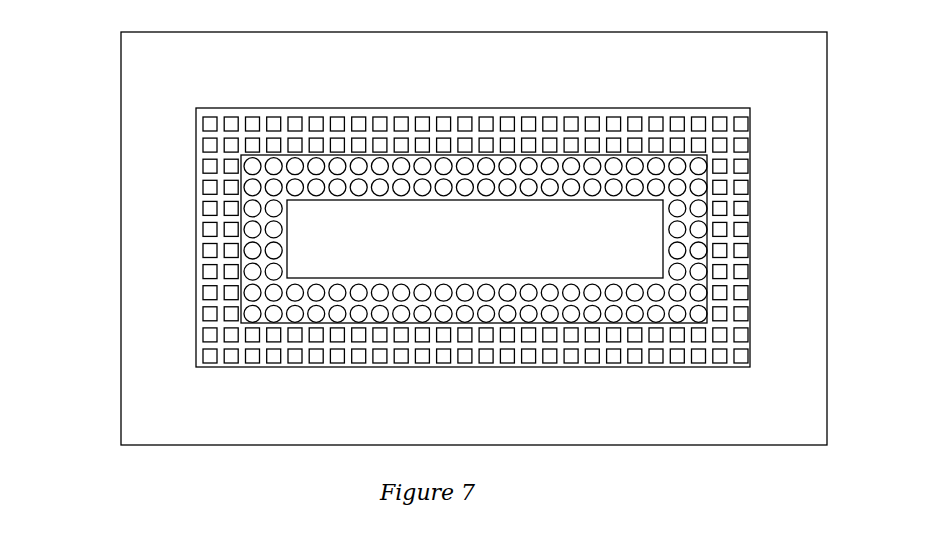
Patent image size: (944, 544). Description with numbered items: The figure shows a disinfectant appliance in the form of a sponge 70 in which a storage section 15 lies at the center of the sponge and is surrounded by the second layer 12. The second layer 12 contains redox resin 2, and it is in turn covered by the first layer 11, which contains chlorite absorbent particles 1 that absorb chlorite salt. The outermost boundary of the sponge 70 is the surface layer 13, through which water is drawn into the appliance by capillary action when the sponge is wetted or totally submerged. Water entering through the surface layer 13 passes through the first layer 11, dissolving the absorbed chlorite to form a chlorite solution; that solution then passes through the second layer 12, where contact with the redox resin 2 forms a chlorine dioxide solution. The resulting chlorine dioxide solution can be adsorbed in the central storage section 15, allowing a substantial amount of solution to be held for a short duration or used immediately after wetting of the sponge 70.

The sponge 70 is at (80, 72).
The first layer 11 is at (200, 135).
The chlorite absorbent particles 1 is at (217, 166).
The storage section 15 is at (200, 221).
The second layer 12 is at (200, 300).
The redox resin 2 is at (258, 315).
The surface layer 13 is at (155, 402).